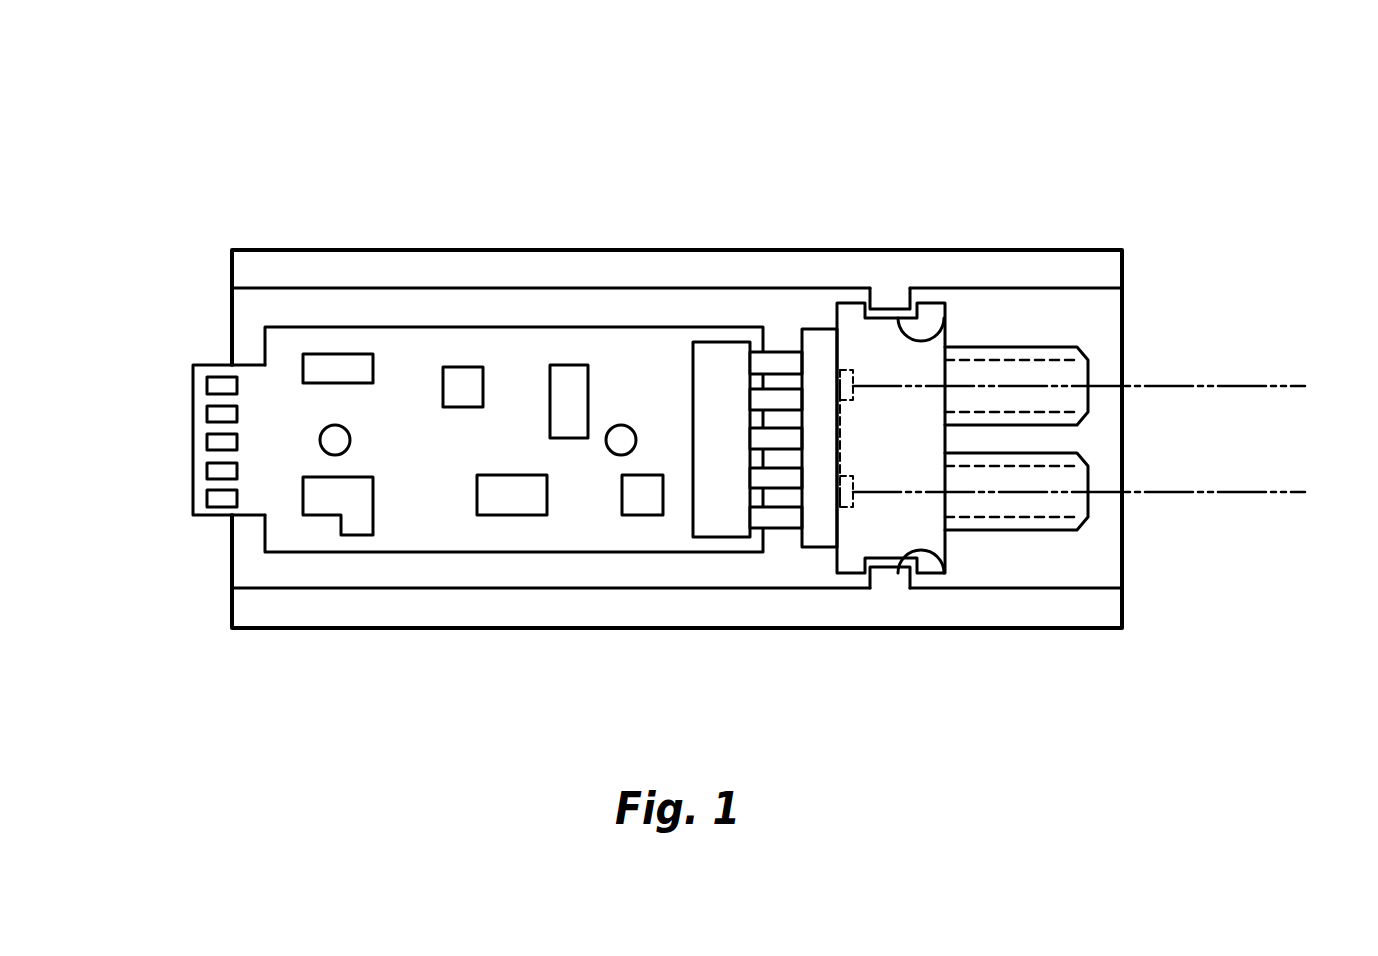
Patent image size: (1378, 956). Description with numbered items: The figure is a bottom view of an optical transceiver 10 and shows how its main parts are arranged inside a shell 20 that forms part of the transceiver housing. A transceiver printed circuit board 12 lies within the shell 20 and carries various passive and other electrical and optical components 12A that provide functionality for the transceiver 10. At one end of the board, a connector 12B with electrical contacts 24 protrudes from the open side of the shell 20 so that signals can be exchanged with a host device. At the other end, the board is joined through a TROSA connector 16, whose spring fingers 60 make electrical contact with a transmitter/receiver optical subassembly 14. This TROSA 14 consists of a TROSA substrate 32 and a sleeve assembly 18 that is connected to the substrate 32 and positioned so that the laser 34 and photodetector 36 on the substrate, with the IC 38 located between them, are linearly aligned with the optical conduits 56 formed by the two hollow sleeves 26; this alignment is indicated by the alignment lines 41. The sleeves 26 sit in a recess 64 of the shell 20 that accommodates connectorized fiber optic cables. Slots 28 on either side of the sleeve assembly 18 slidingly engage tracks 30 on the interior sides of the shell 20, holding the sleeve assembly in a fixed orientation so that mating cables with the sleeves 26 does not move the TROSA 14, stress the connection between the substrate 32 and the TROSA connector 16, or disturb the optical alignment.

The optical transceiver 10 is at (1198, 165).
The transceiver printed circuit board 12 is at (478, 338).
The electrical and optical components 12A is at (335, 353).
The connector 12B is at (190, 378).
The transmitter/receiver optical subassembly 14 is at (848, 275).
The TROSA connector 16 is at (722, 357).
The sleeve assembly 18 is at (930, 306).
The shell 20 is at (305, 630).
The electrical contacts 24 is at (213, 498).
The hollow sleeves 26 is at (1045, 452).
The slots 28 is at (944, 332).
The tracks 30 is at (887, 307).
The TROSA substrate 32 is at (820, 548).
The laser 34 is at (853, 503).
The photodetector 36 is at (853, 398).
The IC 38 is at (842, 440).
The alignment lines 41 is at (1222, 386).
The optical conduits 56 is at (1048, 360).
The spring fingers 60 is at (781, 349).
The recess 64 is at (1037, 297).